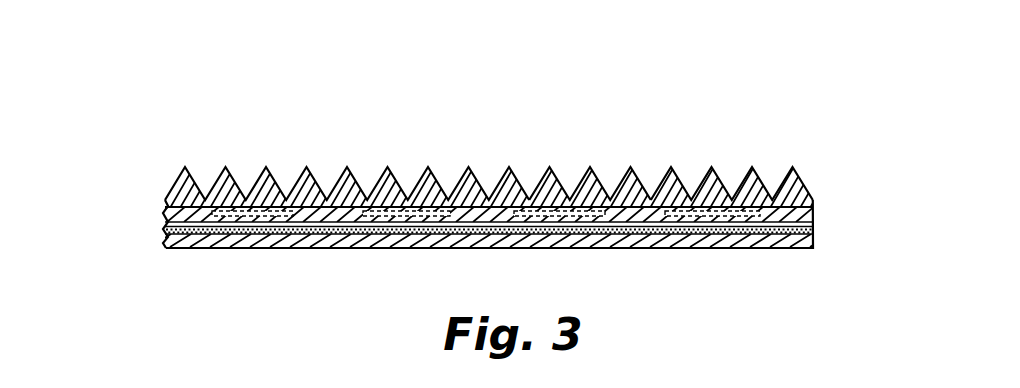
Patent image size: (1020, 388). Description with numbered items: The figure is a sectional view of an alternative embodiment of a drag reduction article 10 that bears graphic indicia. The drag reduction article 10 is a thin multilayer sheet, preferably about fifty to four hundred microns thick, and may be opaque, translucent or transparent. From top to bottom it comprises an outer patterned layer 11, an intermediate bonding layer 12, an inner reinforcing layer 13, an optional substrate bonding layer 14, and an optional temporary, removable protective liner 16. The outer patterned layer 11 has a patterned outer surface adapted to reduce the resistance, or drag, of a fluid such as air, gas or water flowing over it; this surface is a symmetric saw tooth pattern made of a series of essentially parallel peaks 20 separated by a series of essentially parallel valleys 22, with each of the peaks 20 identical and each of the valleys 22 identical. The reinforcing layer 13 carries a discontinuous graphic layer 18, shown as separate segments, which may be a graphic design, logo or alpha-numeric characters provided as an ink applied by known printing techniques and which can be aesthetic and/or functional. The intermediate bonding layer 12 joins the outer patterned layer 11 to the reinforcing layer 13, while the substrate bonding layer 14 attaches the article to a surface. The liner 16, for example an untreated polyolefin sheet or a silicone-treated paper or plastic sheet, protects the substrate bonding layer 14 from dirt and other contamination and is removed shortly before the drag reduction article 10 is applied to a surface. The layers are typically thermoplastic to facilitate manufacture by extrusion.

The drag reduction article 10 is at (799, 104).
The outer patterned layer 11 is at (805, 197).
The intermediate bonding layer 12 is at (815, 214).
The reinforcing layer 13 is at (815, 227).
The substrate bonding layer 14 is at (167, 228).
The temporary protective liner 16 is at (551, 240).
The graphic layer 18 is at (434, 201).
The peaks 20 is at (630, 167).
The valleys 22 is at (776, 198).